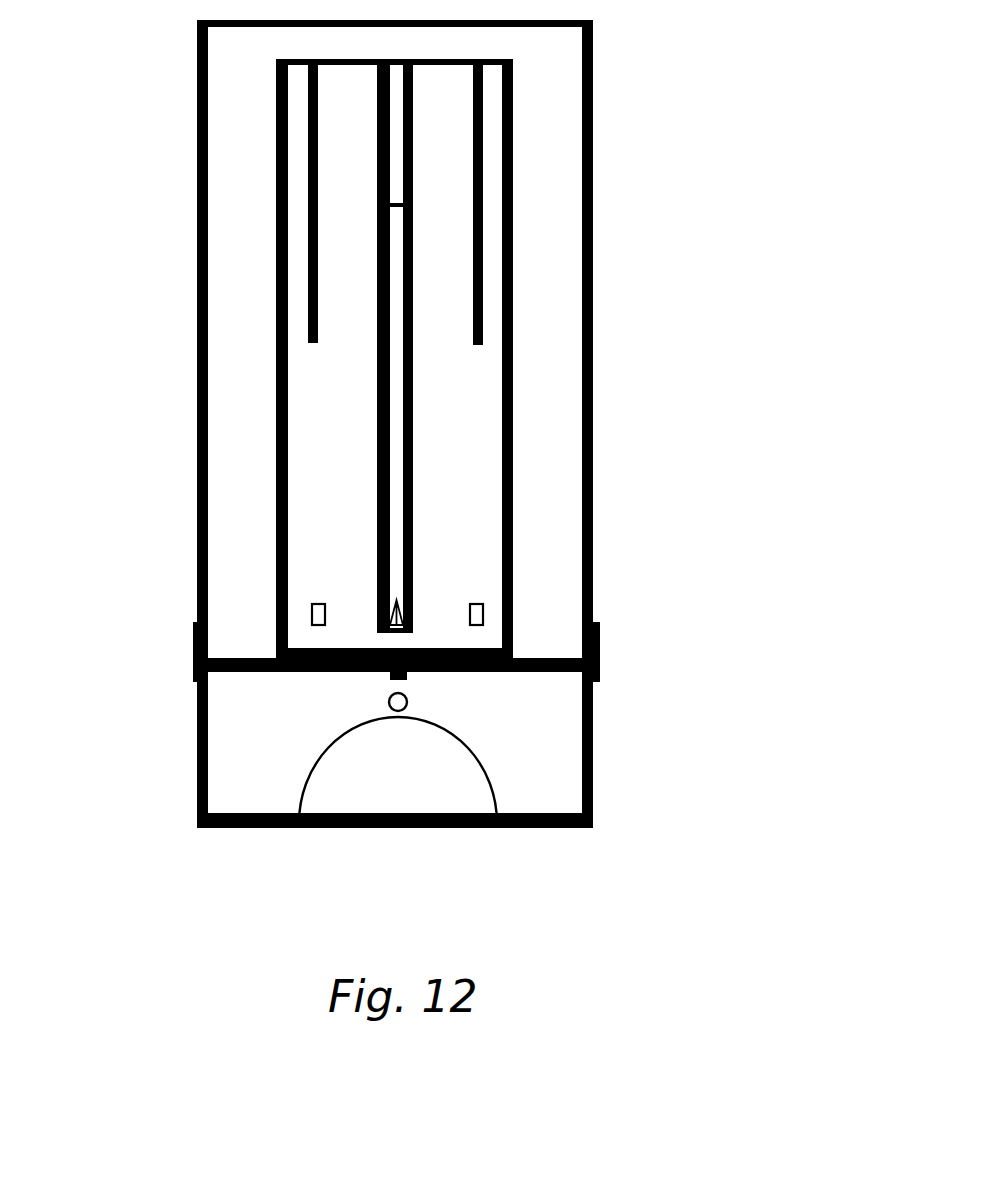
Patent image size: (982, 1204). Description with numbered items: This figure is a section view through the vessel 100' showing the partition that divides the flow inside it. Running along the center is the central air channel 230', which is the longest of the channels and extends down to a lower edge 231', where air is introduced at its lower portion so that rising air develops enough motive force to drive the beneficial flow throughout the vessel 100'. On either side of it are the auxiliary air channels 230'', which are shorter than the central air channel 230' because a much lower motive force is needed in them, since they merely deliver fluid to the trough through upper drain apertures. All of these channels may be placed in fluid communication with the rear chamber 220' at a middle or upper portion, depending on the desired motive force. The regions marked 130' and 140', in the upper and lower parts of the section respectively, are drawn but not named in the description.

The vessel 100' is at (431, 424).
The upper housing portion 130' is at (367, 351).
The lower housing portion 140' is at (310, 750).
The rear chamber 220' is at (395, 356).
The central air channel 230' is at (539, 353).
The auxiliary air channels 230'' is at (373, 228).
The lower edge 231' is at (543, 179).